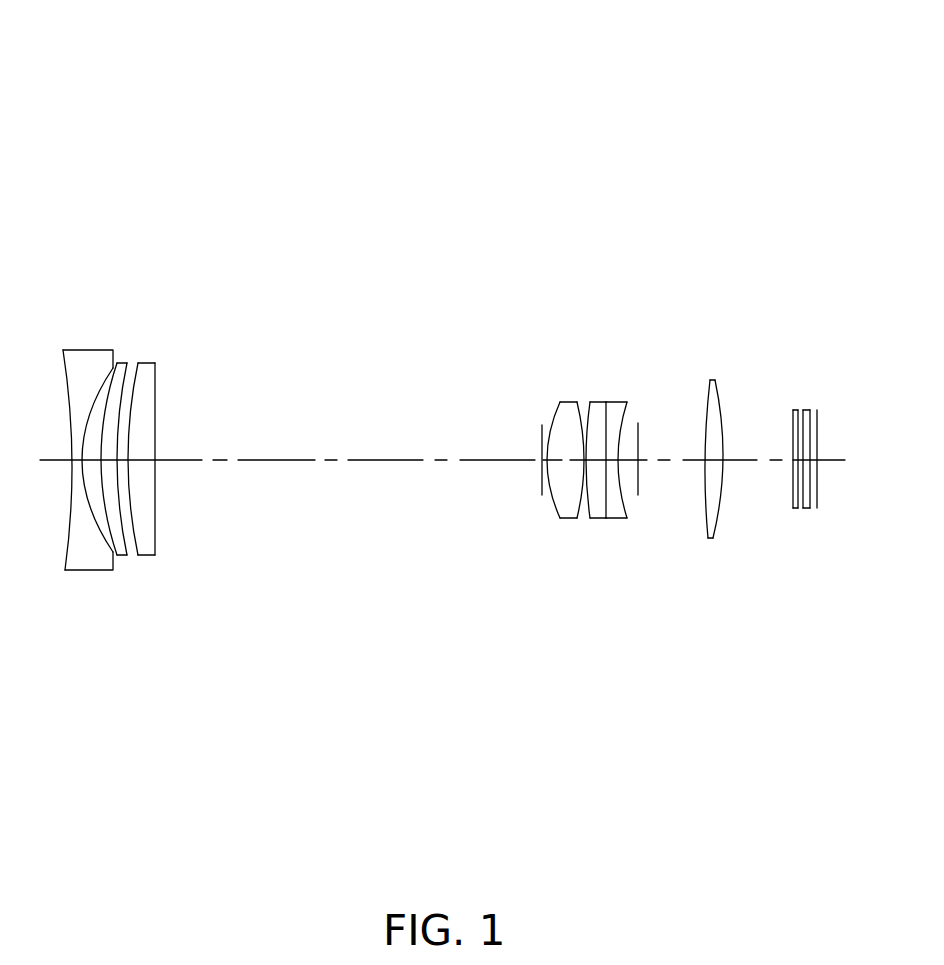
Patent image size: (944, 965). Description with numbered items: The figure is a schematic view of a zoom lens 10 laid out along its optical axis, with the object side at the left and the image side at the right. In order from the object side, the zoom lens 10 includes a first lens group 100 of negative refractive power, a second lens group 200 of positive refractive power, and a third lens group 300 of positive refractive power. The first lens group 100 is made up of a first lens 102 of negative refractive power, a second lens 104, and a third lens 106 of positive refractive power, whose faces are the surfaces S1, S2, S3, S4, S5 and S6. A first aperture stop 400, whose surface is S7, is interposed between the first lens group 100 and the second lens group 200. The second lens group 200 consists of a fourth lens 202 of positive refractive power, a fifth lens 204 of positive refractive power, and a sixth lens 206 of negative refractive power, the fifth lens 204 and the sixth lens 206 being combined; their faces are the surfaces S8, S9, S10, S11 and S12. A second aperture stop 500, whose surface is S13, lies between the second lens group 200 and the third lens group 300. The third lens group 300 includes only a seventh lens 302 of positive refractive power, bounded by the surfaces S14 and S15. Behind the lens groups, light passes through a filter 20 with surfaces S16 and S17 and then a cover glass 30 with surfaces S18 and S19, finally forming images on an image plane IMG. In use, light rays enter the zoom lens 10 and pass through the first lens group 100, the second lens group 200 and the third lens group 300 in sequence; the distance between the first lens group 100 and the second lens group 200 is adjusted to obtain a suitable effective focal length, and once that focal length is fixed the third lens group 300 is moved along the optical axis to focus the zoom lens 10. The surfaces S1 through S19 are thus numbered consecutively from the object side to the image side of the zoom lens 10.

The zoom lens 10 is at (443, 119).
The first lens group 100 is at (255, 283).
The first lens 102 is at (134, 456).
The second lens 104 is at (132, 420).
The third lens 106 is at (189, 445).
The surface S1 is at (67, 548).
The surface S2 is at (95, 513).
The surface S3 is at (103, 488).
The surface S4 is at (120, 422).
The surface S5 is at (135, 557).
The surface S6 is at (157, 522).
The first aperture stop 400 is at (486, 475).
The surface S7 is at (540, 432).
The second lens group 200 is at (682, 332).
The fourth lens 202 is at (513, 447).
The fifth lens 204 is at (602, 468).
The sixth lens 206 is at (640, 472).
The surface S8 is at (555, 413).
The surface S9 is at (580, 513).
The surface S10 is at (588, 515).
The surface S11 is at (607, 490).
The surface S12 is at (620, 480).
The second aperture stop 500 is at (675, 519).
The surface S13 is at (642, 442).
The third lens group 300 is at (750, 470).
The seventh lens 302 is at (750, 462).
The surface S14 is at (703, 482).
The surface S15 is at (717, 513).
The filter 20 is at (765, 448).
The surface S16 is at (793, 493).
The surface S17 is at (802, 410).
The cover glass 30 is at (791, 467).
The surface S18 is at (805, 438).
The surface S19 is at (812, 510).
The image plane IMG is at (818, 425).